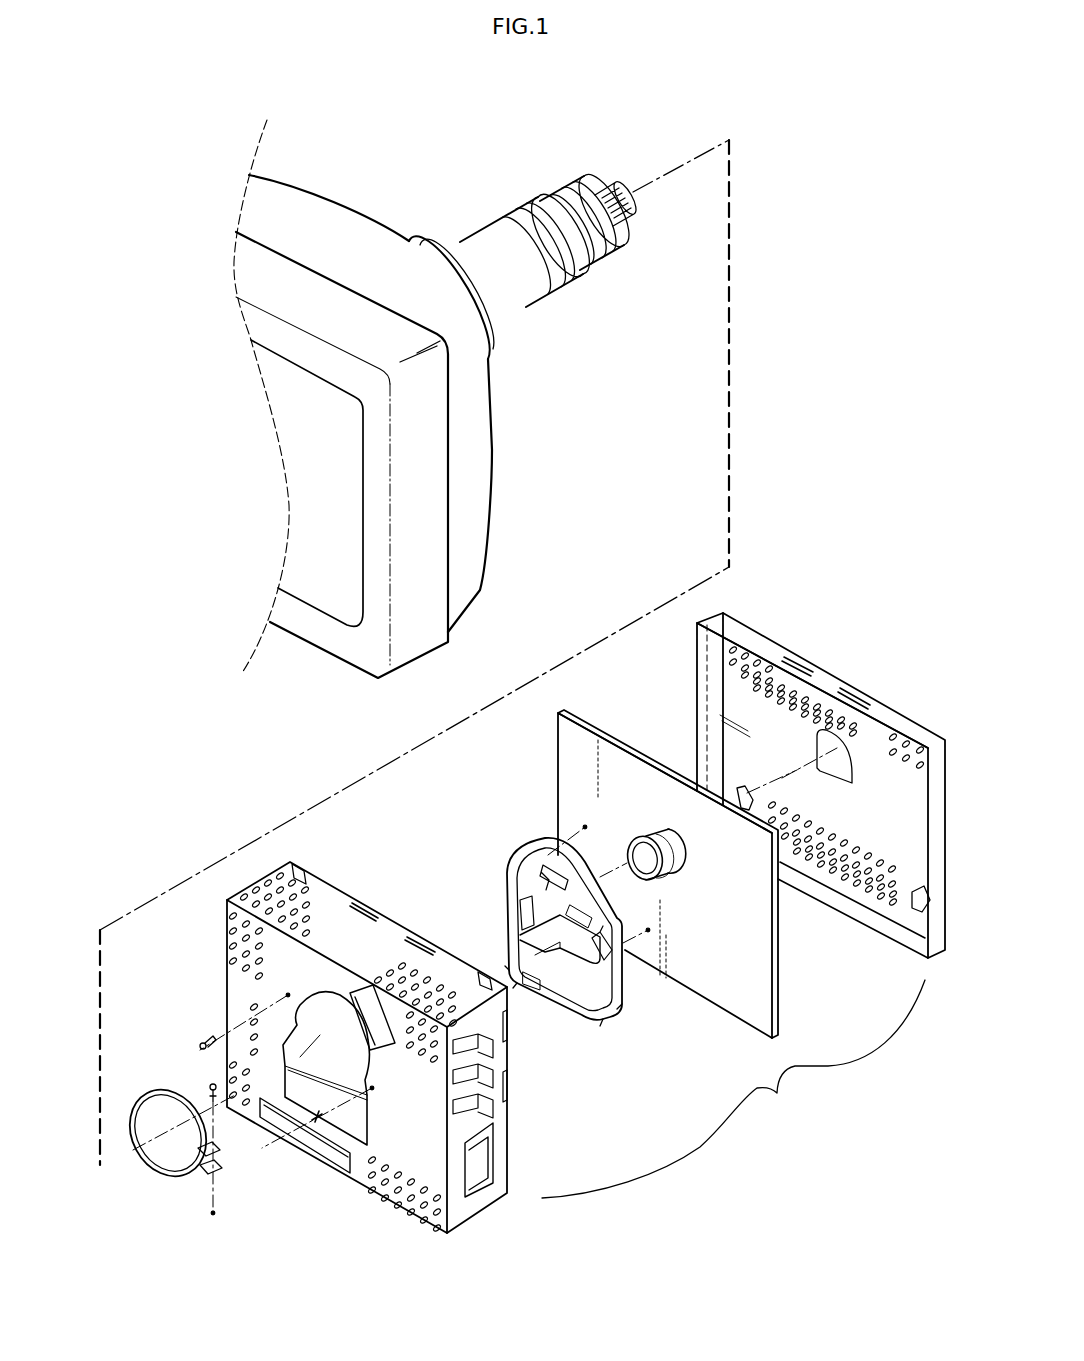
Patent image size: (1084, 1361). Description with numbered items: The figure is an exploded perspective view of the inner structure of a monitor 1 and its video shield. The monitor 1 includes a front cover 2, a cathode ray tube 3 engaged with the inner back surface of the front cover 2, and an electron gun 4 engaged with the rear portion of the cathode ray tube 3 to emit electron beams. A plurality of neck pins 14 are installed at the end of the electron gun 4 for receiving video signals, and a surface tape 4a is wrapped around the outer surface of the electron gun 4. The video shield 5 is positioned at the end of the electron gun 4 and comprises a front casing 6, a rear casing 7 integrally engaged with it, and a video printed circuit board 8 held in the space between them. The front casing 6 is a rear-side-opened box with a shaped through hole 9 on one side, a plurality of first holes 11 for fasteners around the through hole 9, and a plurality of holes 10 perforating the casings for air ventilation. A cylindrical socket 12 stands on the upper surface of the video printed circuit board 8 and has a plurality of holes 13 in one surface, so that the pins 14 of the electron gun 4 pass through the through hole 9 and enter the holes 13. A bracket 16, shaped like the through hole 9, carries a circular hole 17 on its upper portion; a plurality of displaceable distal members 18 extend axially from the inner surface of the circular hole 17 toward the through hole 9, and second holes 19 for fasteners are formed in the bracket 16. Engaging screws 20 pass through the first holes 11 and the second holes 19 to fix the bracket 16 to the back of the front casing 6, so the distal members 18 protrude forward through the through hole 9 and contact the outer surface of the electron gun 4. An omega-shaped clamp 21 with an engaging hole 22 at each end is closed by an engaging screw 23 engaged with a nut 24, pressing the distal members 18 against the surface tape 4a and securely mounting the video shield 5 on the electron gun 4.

The monitor 1 is at (152, 155).
The front cover 2 is at (264, 285).
The cathode ray tube 3 is at (338, 232).
The electron gun 4 is at (522, 247).
The surface tape 4a is at (528, 202).
The neck pins 14 is at (618, 186).
The video shield 5 is at (733, 1089).
The front casing 6 is at (359, 1034).
The rear casing 7 is at (937, 952).
The video printed circuit board 8 is at (672, 889).
The through hole 9 is at (325, 1000).
The holes 10 is at (287, 877).
The first holes 11 is at (288, 995).
The socket 12 is at (645, 838).
The holes 13 is at (658, 840).
The bracket 16 is at (553, 913).
The circular hole 17 is at (618, 952).
The displaceable distal members 18 is at (515, 853).
The second holes 19 is at (495, 836).
The engaging screws 20 is at (210, 1036).
The clamp 21 is at (207, 1153).
The engaging hole 22 is at (222, 1148).
The engaging screw 23 is at (207, 1087).
The nut 24 is at (215, 1213).